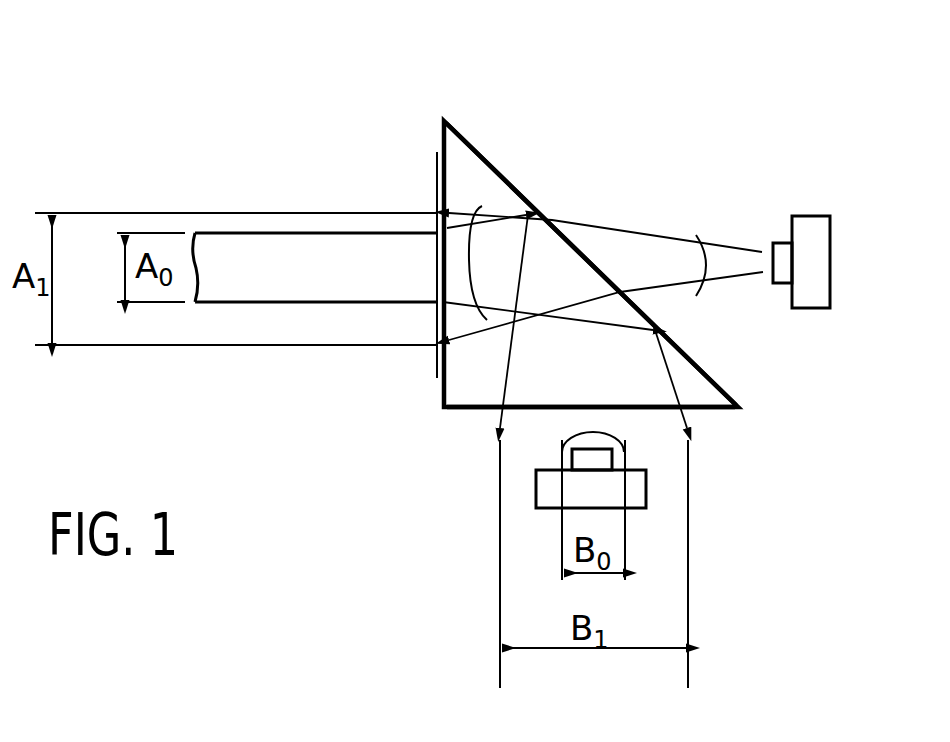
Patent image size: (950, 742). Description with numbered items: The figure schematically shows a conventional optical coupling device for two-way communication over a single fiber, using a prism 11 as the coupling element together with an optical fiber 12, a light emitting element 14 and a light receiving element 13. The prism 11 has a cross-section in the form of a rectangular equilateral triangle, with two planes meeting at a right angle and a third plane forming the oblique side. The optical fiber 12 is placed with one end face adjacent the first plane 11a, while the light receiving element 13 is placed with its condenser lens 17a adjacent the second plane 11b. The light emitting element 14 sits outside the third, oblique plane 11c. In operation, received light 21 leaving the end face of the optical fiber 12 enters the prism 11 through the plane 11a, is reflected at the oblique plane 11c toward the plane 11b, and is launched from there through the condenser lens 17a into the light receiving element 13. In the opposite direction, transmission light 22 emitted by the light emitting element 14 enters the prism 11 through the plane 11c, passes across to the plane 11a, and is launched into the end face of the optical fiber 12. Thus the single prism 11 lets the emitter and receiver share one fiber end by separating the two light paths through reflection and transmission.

The prism 11 is at (473, 128).
The first plane 11a is at (440, 140).
The second plane 11b is at (447, 409).
The third plane 11c is at (497, 168).
The optical fiber 12 is at (303, 231).
The light receiving element 13 is at (608, 460).
The light emitting element 14 is at (780, 234).
The condenser lens 17a is at (575, 448).
The received light 21 is at (485, 318).
The transmission light 22 is at (705, 232).